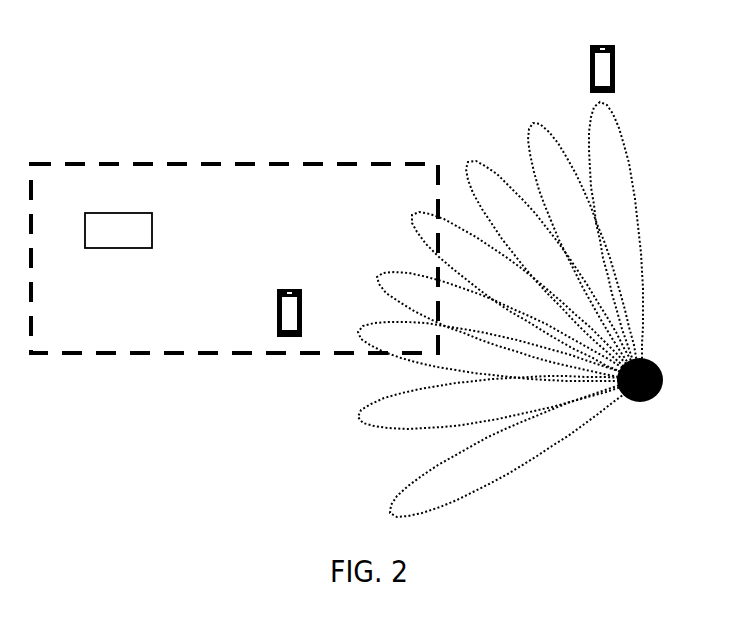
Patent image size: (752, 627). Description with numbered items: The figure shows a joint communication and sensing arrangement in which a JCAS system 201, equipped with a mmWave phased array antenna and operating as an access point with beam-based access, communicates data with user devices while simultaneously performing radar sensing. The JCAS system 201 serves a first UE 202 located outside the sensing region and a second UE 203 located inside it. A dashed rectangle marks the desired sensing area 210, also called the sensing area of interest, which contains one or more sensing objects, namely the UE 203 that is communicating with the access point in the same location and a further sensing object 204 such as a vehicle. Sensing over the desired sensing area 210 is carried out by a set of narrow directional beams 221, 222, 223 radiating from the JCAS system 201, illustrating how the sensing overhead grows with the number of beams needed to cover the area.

The JCAS system 201 is at (663, 383).
The UE 202 is at (603, 55).
The UE 203 is at (290, 300).
The sensing object 204 is at (118, 230).
The desired sensing area 210 is at (234, 245).
The beam 221 is at (520, 292).
The beam 222 is at (501, 325).
The beam 223 is at (491, 351).